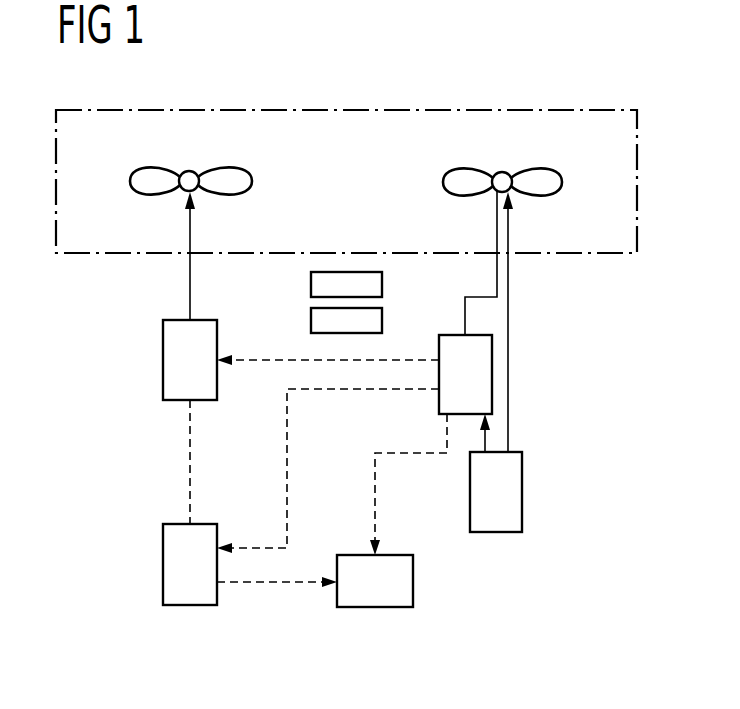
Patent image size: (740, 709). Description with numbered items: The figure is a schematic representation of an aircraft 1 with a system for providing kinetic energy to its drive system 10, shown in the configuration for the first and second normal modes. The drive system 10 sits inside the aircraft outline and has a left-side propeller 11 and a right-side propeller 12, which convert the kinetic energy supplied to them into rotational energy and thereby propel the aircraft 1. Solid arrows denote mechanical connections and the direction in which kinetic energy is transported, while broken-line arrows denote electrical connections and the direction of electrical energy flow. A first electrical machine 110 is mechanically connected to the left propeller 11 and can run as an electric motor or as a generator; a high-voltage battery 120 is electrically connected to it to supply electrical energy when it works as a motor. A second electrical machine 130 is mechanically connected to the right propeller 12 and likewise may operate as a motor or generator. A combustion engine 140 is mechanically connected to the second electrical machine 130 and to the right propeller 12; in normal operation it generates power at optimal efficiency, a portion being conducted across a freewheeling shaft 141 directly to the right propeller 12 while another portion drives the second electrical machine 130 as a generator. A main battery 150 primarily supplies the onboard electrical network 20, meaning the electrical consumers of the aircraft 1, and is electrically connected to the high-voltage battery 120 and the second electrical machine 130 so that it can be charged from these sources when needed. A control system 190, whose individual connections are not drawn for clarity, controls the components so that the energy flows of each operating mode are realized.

The aircraft 1 is at (586, 88).
The drive system 10 is at (366, 108).
The left-side propeller 11 is at (252, 181).
The right-side propeller 12 is at (443, 182).
The onboard electrical network 20 is at (311, 284).
The control system 190 is at (311, 320).
The first electrical machine 110 is at (163, 360).
The high-voltage battery 120 is at (163, 565).
The second electrical machine 130 is at (452, 335).
The combustion engine 140 is at (522, 492).
The freewheeling shaft 141 is at (508, 330).
The main battery 150 is at (413, 583).